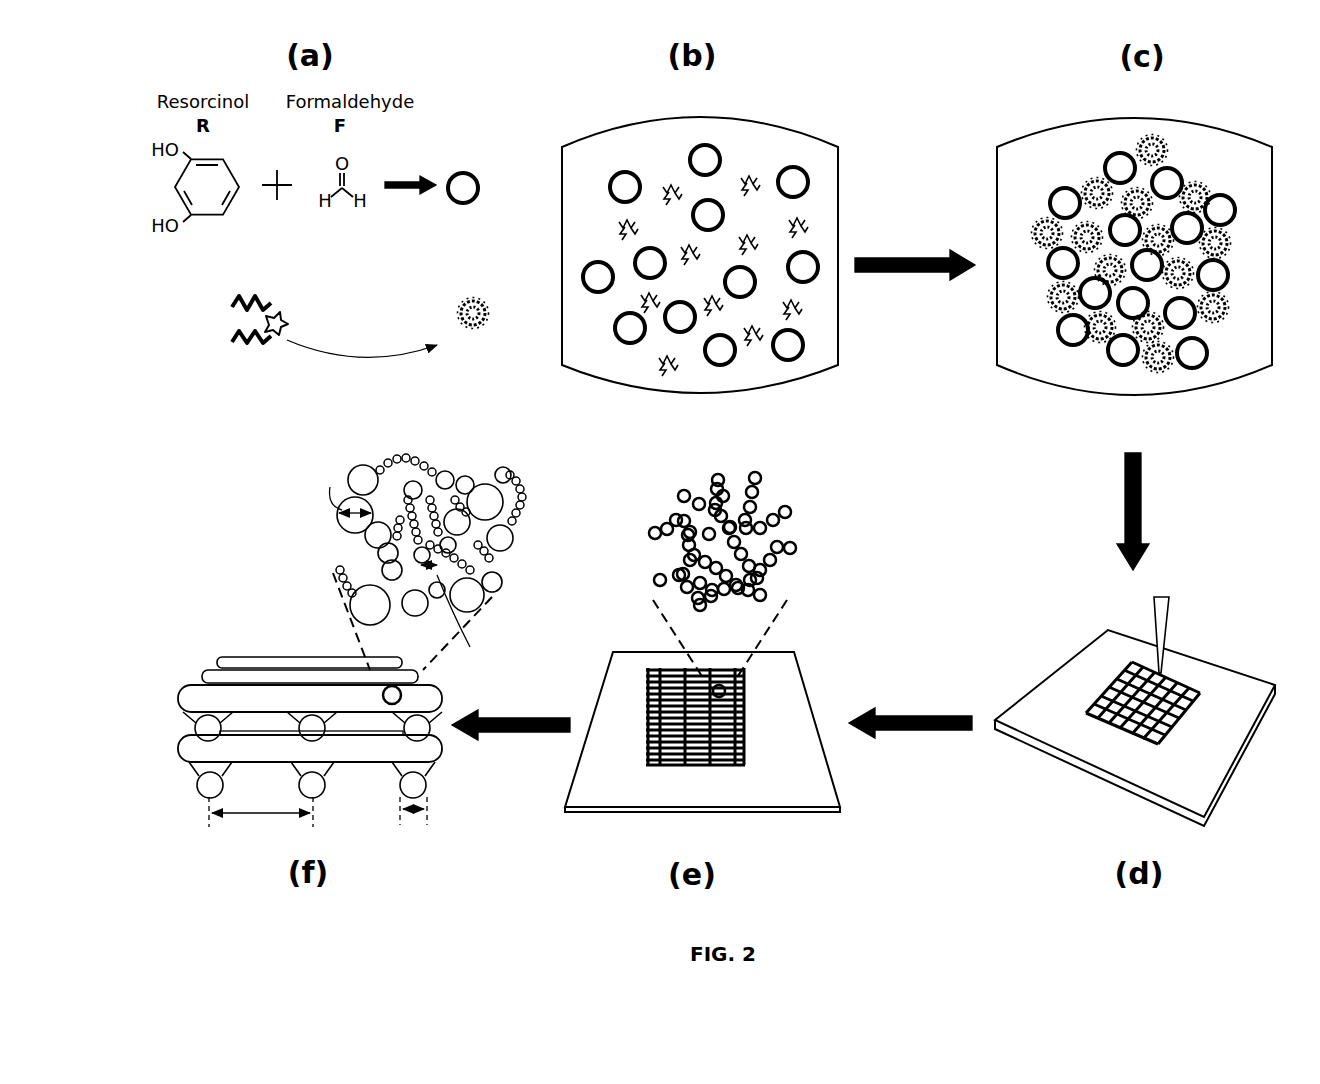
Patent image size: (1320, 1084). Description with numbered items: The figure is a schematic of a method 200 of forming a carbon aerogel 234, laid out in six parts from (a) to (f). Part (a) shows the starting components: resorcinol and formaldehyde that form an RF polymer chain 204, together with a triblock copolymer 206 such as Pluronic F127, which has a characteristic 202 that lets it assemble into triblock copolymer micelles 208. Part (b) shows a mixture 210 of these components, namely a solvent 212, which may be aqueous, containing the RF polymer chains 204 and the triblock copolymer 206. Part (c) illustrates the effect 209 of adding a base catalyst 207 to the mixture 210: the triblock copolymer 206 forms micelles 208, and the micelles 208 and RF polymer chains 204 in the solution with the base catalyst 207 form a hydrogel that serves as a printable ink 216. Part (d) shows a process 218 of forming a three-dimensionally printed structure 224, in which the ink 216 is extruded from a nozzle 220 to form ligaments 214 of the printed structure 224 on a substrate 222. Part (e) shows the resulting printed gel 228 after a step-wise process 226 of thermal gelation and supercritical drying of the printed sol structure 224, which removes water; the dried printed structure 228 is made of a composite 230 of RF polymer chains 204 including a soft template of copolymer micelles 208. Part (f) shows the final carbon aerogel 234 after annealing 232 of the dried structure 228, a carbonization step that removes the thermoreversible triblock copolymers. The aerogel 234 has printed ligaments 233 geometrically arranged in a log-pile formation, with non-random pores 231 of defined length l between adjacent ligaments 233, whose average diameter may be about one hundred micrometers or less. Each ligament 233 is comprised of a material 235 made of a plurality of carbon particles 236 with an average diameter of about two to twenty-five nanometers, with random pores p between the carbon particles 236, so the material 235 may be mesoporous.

The method 200 is at (208, 422).
The characteristic 202 is at (362, 362).
The RF polymer chain 204 is at (468, 174).
The triblock copolymer 206 is at (222, 312).
The base catalyst 207 is at (925, 257).
The triblock copolymer micelles 208 is at (437, 297).
The effect 209 is at (1060, 87).
The mixture 210 is at (643, 85).
The solvent 212 is at (586, 158).
The ligaments 214 is at (1132, 662).
The printable ink 216 is at (1011, 365).
The process 218 is at (1224, 587).
The nozzle 220 is at (1169, 614).
The substrate 222 is at (1020, 732).
The 3D printed structure 224 is at (1198, 707).
The step-wise process 226 is at (827, 580).
The 3D-printed gel 228 is at (756, 710).
The composite 230 is at (767, 498).
The non-random pores 231 is at (267, 780).
The annealing 232 is at (235, 580).
The printed ligaments 233 is at (428, 792).
The carbon aerogel 234 is at (230, 645).
The material 235 is at (266, 708).
The carbon particles 236 is at (525, 540).